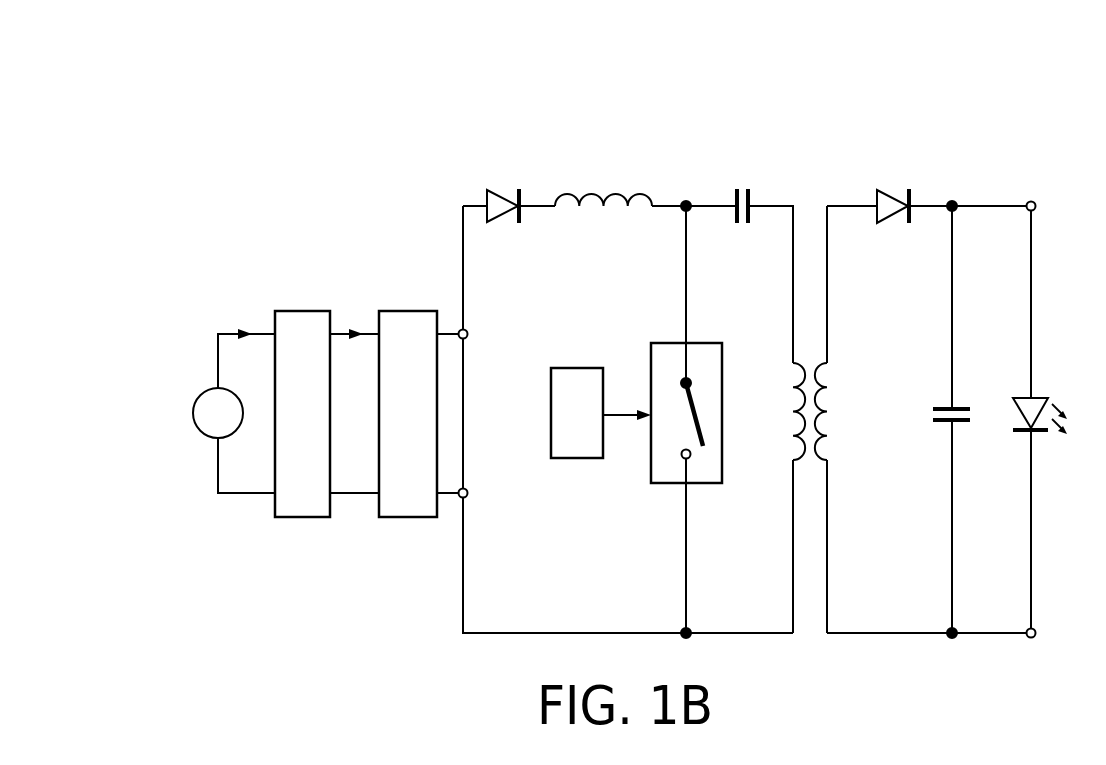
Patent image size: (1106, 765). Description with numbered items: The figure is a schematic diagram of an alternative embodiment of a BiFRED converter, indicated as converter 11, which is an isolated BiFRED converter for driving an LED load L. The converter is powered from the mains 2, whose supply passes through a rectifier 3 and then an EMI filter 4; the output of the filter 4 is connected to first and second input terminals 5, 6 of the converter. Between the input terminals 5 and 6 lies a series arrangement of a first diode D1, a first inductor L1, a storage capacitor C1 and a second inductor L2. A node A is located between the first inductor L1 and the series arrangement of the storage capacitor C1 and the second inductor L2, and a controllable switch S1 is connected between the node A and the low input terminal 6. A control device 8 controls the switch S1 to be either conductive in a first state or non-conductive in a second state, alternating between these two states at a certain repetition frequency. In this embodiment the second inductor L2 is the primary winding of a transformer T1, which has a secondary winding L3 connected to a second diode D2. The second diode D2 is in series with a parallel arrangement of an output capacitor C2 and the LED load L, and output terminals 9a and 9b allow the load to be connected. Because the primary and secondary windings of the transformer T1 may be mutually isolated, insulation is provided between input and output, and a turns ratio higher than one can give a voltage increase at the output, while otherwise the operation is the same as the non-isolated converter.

The converter 11 is at (246, 132).
The mains 2 is at (210, 426).
The rectifier 3 is at (311, 426).
The EMI filter 4 is at (417, 426).
The first input terminal 5 is at (468, 334).
The second input terminal 6 is at (468, 493).
The control device 8 is at (569, 429).
The first diode D1 is at (505, 190).
The first inductor L1 is at (603, 182).
The node A is at (685, 189).
The storage capacitor C1 is at (724, 190).
The controllable switch S1 is at (690, 398).
The second inductor L2 is at (780, 411).
The secondary winding L3 is at (839, 411).
The transformer T1 is at (853, 457).
The second diode D2 is at (895, 192).
The output capacitor C2 is at (933, 419).
The LED load L is at (1030, 416).
The output terminal 9a is at (1033, 189).
The output terminal 9b is at (1033, 652).